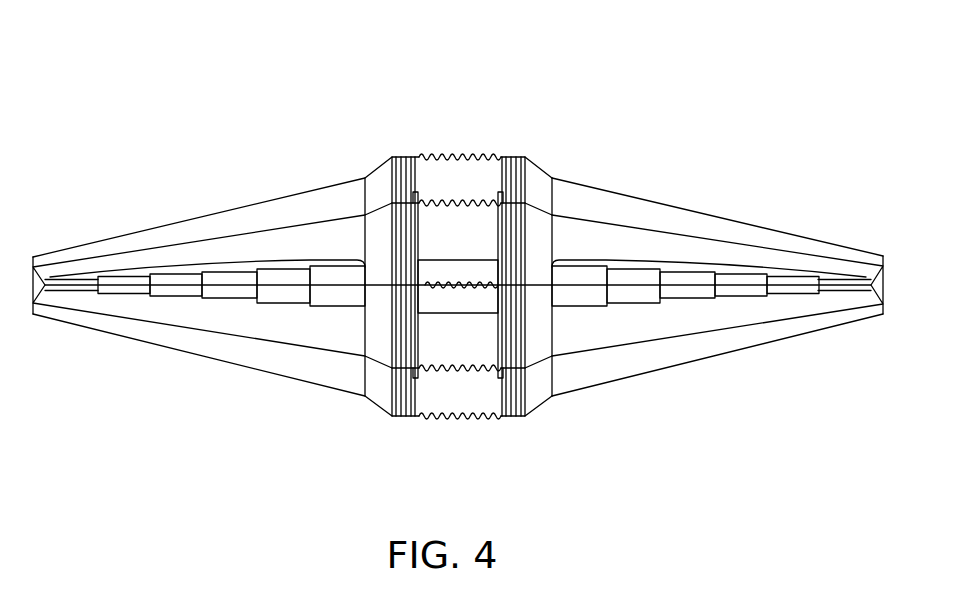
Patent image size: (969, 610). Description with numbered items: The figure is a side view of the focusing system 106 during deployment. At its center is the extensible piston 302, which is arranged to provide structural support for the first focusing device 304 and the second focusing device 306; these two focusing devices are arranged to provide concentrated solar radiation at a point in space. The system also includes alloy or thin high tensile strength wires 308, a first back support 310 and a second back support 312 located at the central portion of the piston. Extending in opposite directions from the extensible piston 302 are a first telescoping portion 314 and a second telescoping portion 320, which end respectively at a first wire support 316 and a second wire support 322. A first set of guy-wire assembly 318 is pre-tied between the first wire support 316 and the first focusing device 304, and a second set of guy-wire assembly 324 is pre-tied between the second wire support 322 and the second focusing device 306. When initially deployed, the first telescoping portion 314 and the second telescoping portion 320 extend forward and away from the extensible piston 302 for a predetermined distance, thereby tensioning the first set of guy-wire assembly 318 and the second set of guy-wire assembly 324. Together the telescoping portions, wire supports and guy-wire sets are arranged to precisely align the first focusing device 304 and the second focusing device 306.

The focusing system 106 is at (208, 79).
The extensible piston 302 is at (455, 259).
The first focusing device 304 is at (407, 157).
The second focusing device 306 is at (553, 325).
The alloy/thin high tensile strength wires 308 is at (463, 203).
The first back support 310 is at (378, 168).
The second back support 312 is at (533, 160).
The first telescoping portion 314 is at (207, 263).
The first wire support 316 is at (33, 300).
The first set of guy-wire assembly 318 is at (333, 203).
The second telescoping portion 320 is at (712, 262).
The second wire support 322 is at (884, 274).
The second set of guy-wire assembly 324 is at (640, 195).